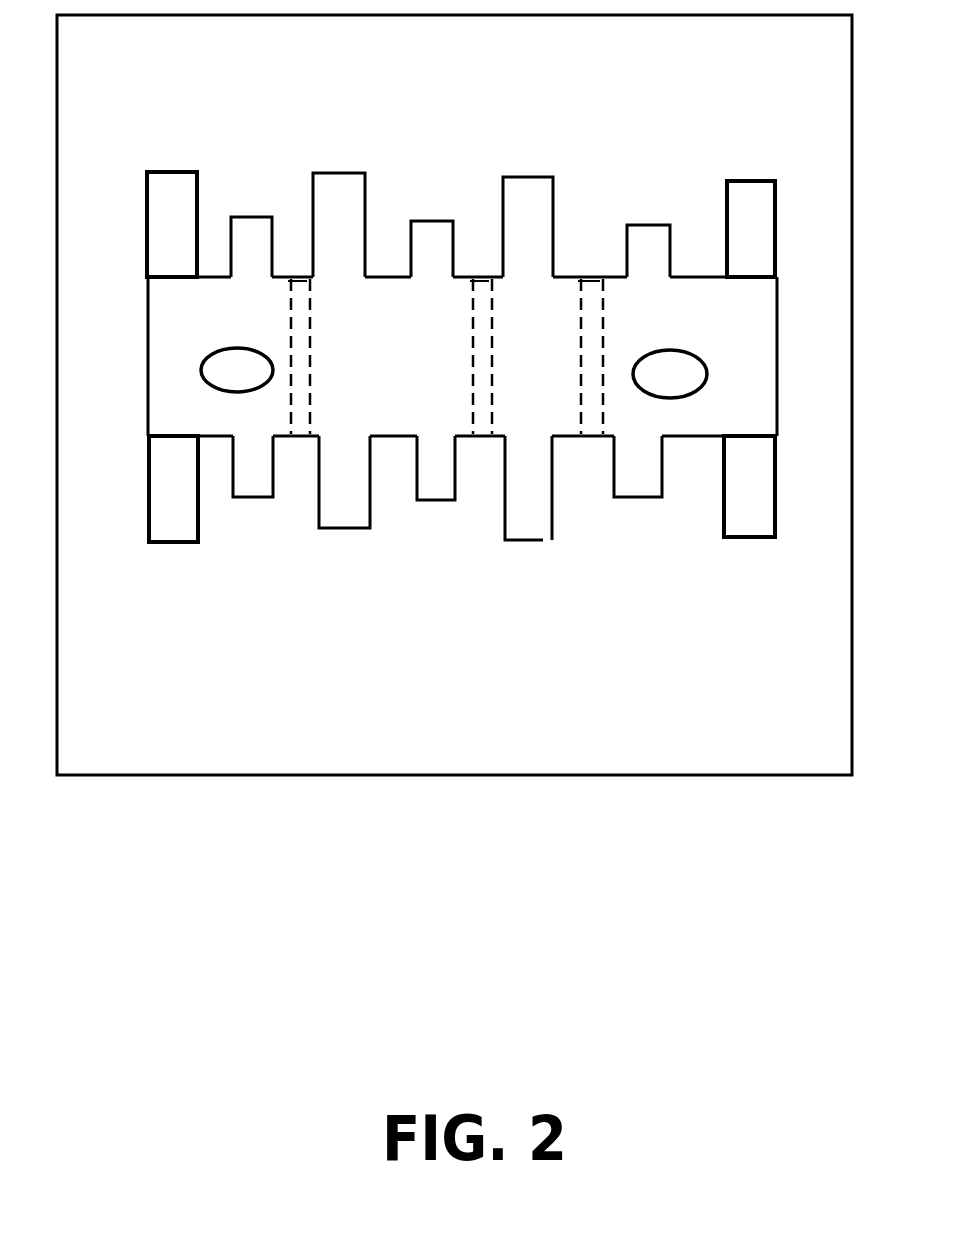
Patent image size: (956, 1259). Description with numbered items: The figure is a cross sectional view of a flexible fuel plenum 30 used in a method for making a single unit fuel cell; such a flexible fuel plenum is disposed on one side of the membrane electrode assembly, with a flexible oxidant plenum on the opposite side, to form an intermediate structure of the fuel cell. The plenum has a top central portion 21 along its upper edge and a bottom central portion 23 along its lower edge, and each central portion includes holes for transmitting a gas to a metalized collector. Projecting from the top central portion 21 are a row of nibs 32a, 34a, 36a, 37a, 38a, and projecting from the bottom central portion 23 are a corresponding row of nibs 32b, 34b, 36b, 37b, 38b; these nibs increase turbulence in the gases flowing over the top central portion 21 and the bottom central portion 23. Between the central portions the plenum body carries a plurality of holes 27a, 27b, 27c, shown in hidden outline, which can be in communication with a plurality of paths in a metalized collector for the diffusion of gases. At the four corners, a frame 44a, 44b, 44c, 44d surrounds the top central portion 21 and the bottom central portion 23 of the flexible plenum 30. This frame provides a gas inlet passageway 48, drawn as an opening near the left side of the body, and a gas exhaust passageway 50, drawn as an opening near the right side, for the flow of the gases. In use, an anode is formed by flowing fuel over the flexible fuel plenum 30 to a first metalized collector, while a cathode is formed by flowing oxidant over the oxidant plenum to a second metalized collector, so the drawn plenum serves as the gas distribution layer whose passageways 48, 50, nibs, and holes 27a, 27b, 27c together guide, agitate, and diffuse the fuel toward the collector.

The top central portion 21 is at (212, 277).
The bottom central portion 23 is at (690, 435).
The hole 27a is at (301, 413).
The hole 27b is at (483, 398).
The hole 27c is at (592, 413).
The flexible fuel plenum 30 is at (117, 775).
The nib 32a is at (249, 233).
The nib 32b is at (251, 478).
The nib 34a is at (339, 192).
The nib 34b is at (339, 515).
The nib 36a is at (425, 236).
The nib 36b is at (433, 485).
The nib 37a is at (522, 202).
The nib 37b is at (519, 518).
The nib 38a is at (645, 242).
The nib 38b is at (638, 483).
The frame 44a is at (170, 205).
The frame 44b is at (750, 205).
The frame 44c is at (169, 527).
The frame 44d is at (743, 513).
The gas inlet passageway 48 is at (230, 375).
The gas exhaust passageway 50 is at (672, 372).